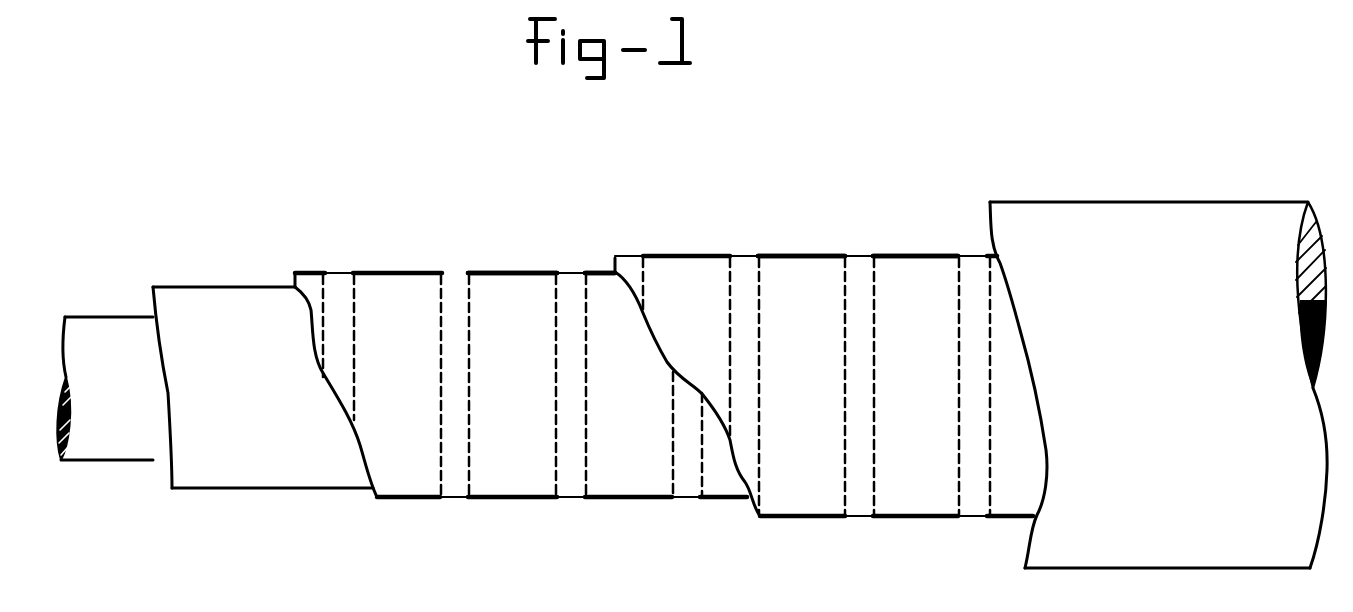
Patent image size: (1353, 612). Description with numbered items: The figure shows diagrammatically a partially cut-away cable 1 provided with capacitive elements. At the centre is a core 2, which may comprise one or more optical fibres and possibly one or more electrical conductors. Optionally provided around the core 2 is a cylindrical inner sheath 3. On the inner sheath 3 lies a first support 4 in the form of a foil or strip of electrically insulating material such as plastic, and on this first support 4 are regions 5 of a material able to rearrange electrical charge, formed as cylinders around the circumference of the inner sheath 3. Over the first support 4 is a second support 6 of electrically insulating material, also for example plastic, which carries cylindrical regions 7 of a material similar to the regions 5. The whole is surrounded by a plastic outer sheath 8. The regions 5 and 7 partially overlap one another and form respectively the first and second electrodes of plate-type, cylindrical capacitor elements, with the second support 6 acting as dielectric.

The cable 1 is at (422, 243).
The core 2 is at (113, 451).
The inner sheath 3 is at (257, 470).
The first support 4 is at (450, 476).
The regions 5 is at (596, 272).
The second support 6 is at (867, 482).
The regions 7 is at (900, 254).
The outer sheath 8 is at (1080, 219).